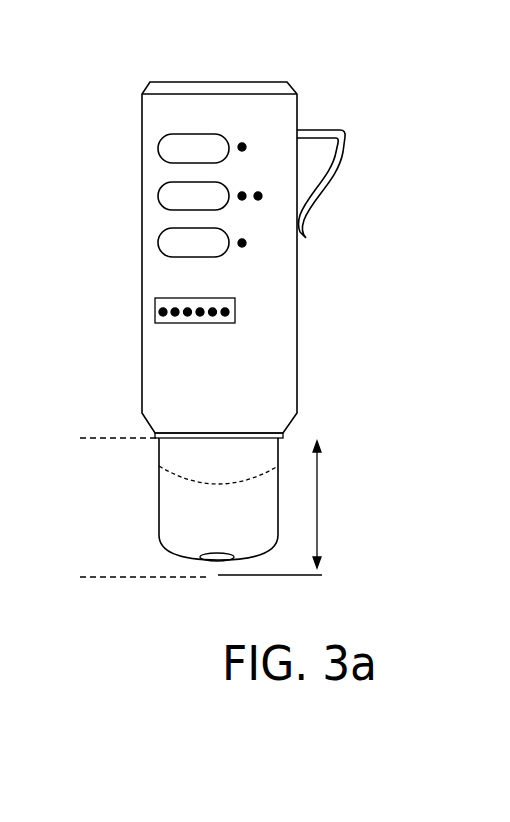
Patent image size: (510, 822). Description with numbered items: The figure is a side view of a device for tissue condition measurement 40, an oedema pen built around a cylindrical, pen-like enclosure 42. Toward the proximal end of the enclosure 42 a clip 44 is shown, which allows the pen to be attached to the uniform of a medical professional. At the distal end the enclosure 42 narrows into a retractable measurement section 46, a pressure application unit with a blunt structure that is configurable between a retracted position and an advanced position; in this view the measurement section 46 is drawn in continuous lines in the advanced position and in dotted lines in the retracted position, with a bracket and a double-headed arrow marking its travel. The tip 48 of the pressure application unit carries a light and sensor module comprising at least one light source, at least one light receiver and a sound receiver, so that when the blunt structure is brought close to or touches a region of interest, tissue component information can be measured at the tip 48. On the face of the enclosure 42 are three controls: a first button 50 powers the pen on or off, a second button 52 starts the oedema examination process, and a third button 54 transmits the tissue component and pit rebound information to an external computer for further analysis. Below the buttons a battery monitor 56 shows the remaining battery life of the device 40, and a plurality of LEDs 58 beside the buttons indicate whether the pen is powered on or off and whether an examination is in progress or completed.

The device for tissue condition measurement 40 is at (276, 69).
The enclosure 42 is at (298, 104).
The clip 44 is at (328, 183).
The retractable measurement section 46 is at (80, 438).
The tip 48 is at (218, 561).
The first button 50 is at (166, 150).
The second button 52 is at (166, 198).
The third button 54 is at (166, 245).
The battery monitor 56 is at (165, 316).
The LEDs 58 is at (243, 142).